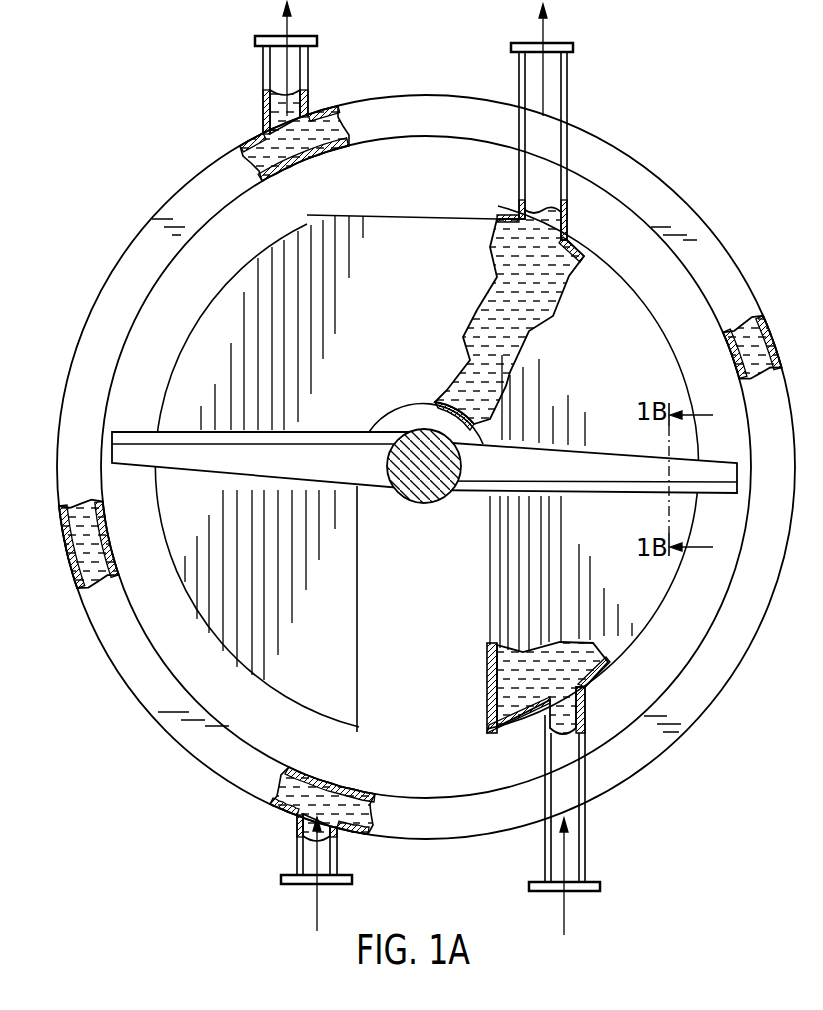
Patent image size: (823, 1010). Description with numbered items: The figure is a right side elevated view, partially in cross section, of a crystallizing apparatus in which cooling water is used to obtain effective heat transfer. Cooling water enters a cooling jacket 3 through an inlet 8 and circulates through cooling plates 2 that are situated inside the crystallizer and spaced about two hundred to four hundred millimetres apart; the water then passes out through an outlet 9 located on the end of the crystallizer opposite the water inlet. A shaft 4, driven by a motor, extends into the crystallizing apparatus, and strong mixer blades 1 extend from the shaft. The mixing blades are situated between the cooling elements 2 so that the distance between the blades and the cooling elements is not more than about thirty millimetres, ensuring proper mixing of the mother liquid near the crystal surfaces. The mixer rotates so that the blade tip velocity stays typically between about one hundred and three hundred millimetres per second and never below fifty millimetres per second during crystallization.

The mixer blades 1 is at (138, 432).
The cooling plates 2 is at (352, 678).
The cooling jacket 3 is at (102, 342).
The shaft 4 is at (425, 486).
The inlet 8 is at (541, 842).
The outlet 9 is at (516, 73).